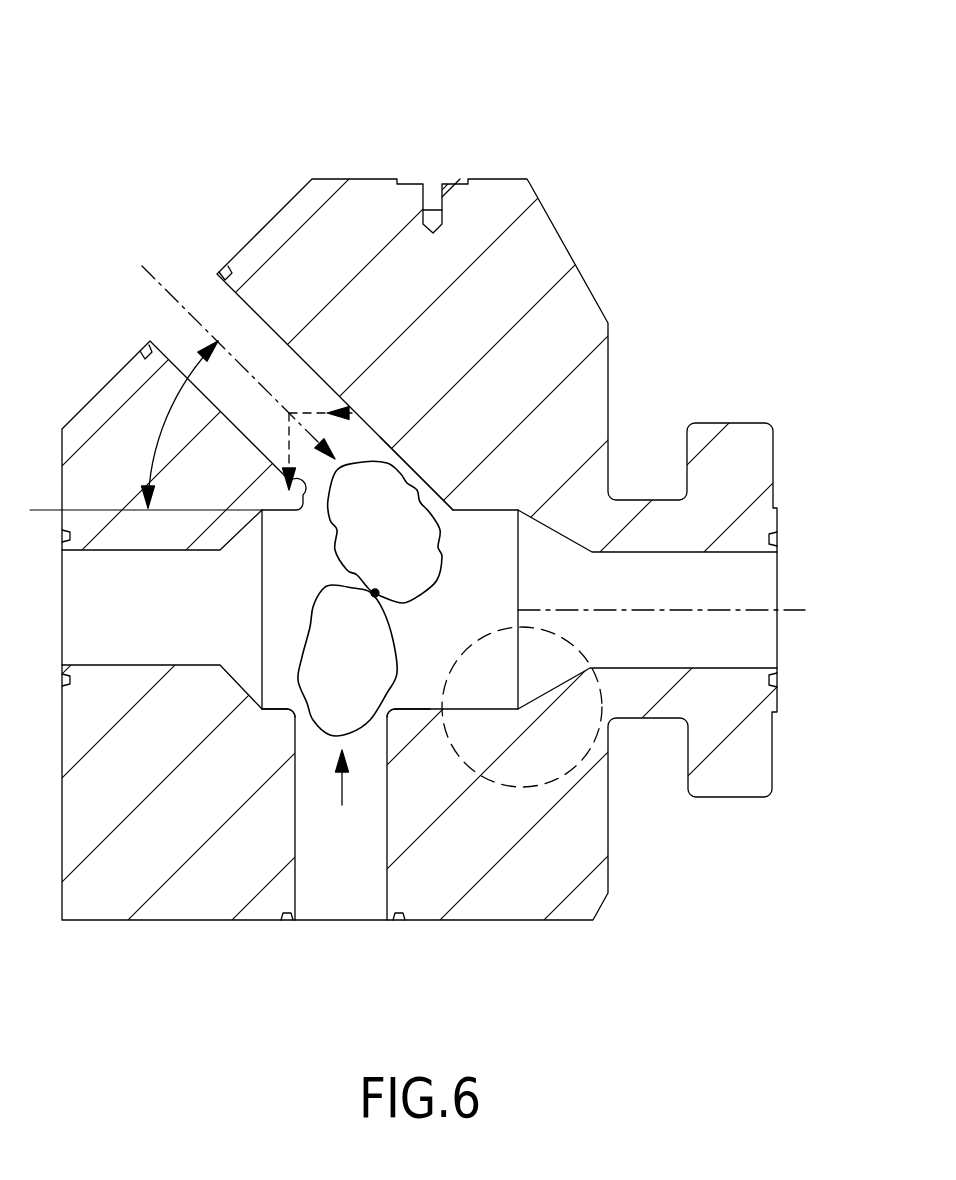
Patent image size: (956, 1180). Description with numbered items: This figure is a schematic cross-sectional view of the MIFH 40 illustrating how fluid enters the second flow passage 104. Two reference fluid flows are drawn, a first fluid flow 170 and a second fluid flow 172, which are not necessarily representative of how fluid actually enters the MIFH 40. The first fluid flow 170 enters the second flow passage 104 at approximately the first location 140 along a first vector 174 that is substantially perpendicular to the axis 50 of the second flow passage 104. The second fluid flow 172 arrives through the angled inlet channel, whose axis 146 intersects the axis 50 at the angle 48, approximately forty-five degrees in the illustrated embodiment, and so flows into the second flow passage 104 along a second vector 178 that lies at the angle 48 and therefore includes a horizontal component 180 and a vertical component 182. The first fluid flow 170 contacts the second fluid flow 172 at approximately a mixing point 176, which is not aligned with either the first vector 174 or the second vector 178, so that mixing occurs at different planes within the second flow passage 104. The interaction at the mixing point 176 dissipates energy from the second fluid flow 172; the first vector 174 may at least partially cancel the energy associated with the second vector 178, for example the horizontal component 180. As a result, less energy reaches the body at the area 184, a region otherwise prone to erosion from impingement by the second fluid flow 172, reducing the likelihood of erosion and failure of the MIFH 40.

The MIFH 40 is at (147, 118).
The angle 48 is at (149, 482).
The axis 50 is at (805, 609).
The second flow passage 104 is at (275, 702).
The first location 140 is at (309, 612).
The axis 146 is at (152, 278).
The first fluid flow 170 is at (392, 704).
The second fluid flow 172 is at (410, 478).
The first vector 174 is at (342, 805).
The mixing point 176 is at (390, 607).
The second vector 178 is at (290, 416).
The horizontal component 180 is at (284, 462).
The vertical component 182 is at (350, 413).
The area 184 is at (578, 645).